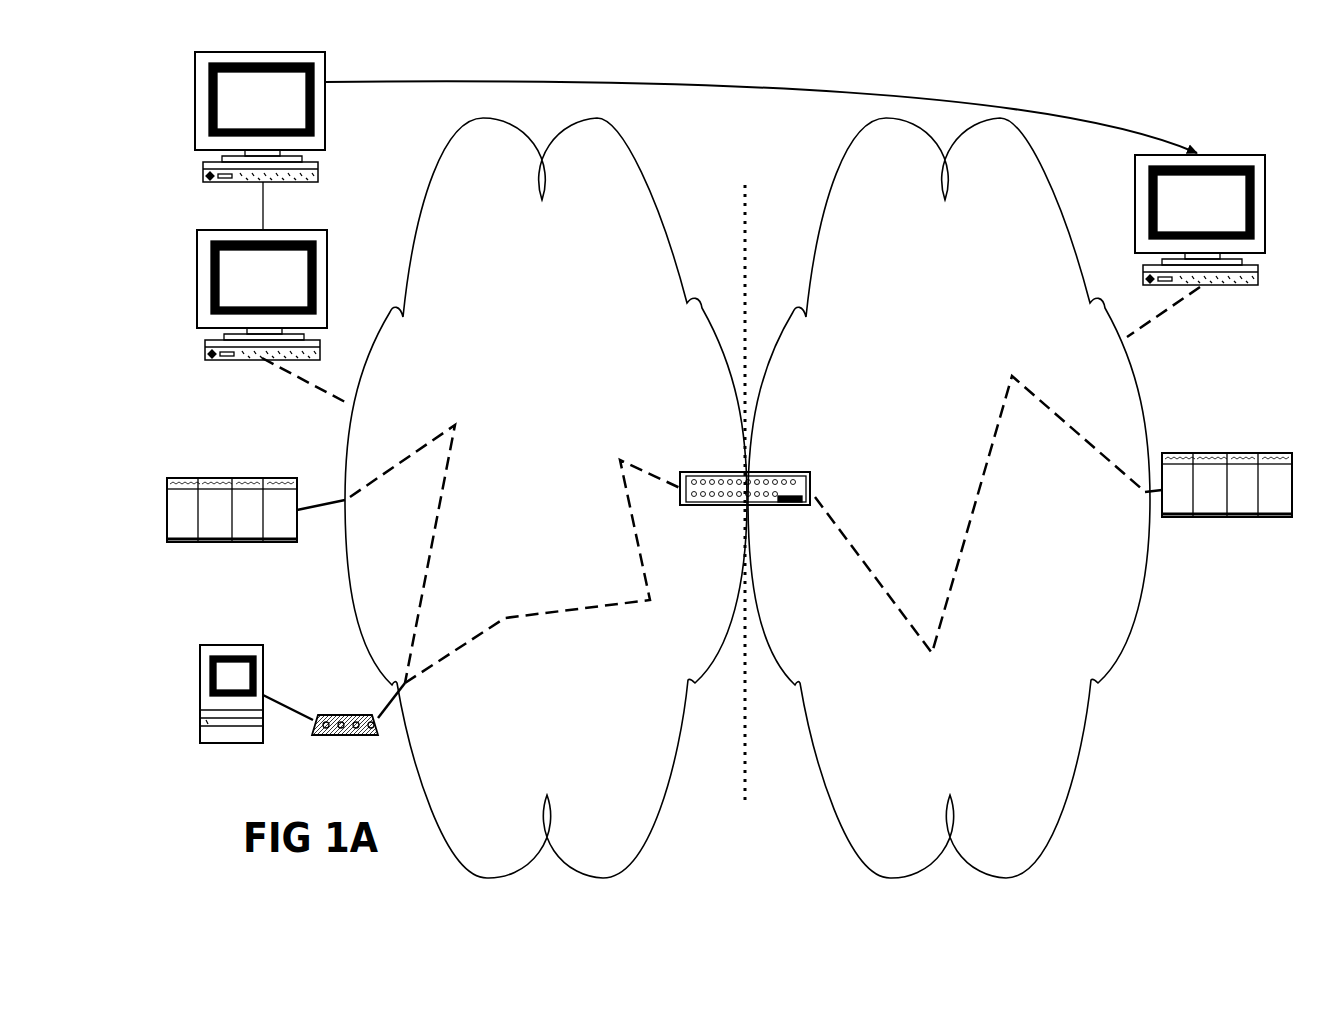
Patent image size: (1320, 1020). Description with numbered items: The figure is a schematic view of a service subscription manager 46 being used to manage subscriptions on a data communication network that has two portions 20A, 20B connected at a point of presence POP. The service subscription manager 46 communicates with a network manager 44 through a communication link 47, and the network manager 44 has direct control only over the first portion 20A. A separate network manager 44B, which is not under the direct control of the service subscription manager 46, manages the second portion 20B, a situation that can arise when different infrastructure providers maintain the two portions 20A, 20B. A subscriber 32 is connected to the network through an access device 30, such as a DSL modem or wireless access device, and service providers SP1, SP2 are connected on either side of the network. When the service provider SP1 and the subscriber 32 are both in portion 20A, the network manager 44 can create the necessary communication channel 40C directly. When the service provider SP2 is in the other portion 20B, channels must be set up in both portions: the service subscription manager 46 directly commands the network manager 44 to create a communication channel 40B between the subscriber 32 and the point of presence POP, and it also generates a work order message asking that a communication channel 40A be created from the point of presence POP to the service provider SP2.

The first network portion 20A is at (527, 773).
The second network portion 20B is at (969, 773).
The access device 30 is at (342, 712).
The subscriber 32 is at (232, 645).
The communication channel 40A is at (837, 524).
The communication channel 40B is at (515, 616).
The communication channel 40C is at (437, 520).
The network manager 44 is at (205, 241).
The separate network manager 44B is at (1145, 170).
The service subscription manager 46 is at (325, 115).
The communication link 47 is at (262, 200).
The service provider SP1 is at (188, 480).
The service provider SP2 is at (1183, 455).
The point of presence POP is at (758, 485).